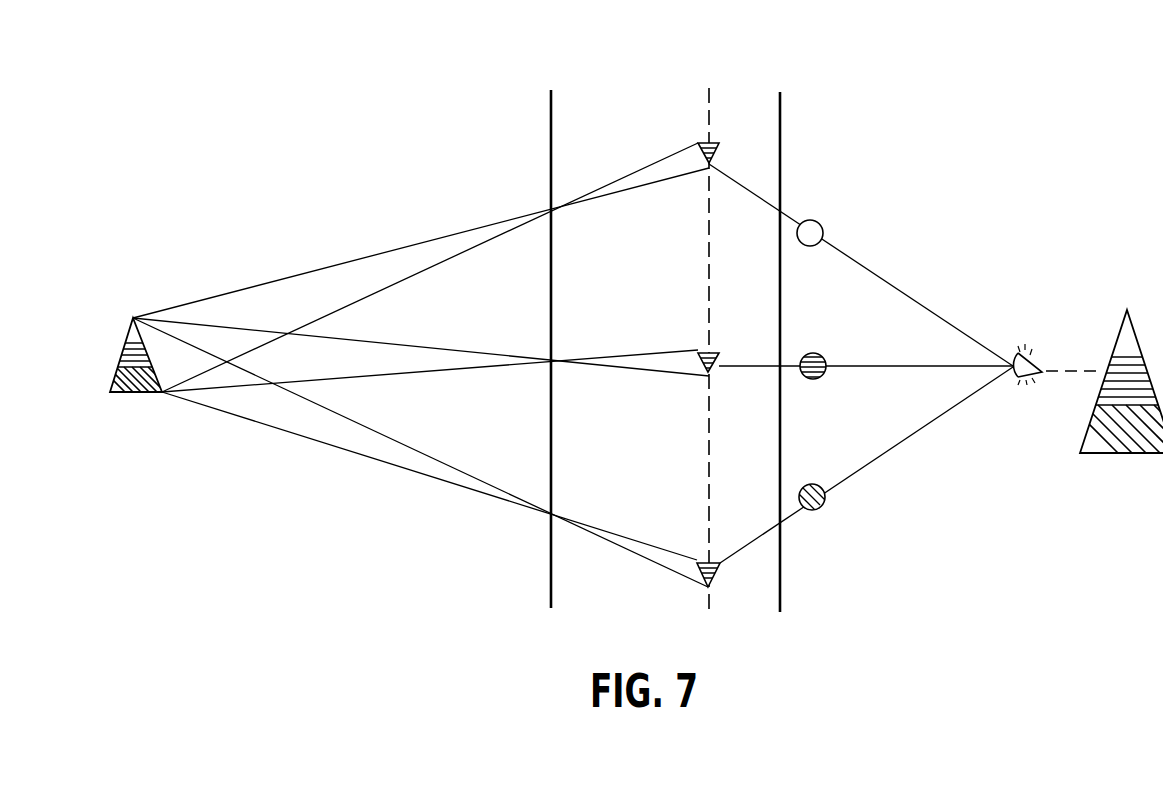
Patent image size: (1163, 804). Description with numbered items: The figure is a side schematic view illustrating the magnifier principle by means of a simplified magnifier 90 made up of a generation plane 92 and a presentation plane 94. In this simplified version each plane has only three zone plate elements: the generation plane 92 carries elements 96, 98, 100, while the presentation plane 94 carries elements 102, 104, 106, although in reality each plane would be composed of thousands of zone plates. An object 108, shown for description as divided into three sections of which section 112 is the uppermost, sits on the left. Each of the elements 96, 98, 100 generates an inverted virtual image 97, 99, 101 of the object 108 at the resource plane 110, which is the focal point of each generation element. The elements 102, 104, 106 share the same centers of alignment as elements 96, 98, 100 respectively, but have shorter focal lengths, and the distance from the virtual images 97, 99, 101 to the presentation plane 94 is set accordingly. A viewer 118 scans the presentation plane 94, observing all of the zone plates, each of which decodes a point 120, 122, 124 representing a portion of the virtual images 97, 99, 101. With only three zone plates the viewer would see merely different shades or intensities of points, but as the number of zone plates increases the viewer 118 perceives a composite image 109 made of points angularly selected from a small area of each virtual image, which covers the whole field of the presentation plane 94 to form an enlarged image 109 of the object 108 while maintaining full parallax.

The magnifier 90 is at (635, 80).
The generation plane 92 is at (549, 112).
The presentation plane 94 is at (781, 122).
The zone plate element of generation plane 96 is at (549, 210).
The inverted virtual image 97 is at (697, 145).
The zone plate element of generation plane 98 is at (549, 357).
The inverted virtual image 99 is at (700, 352).
The zone plate element of generation plane 100 is at (549, 508).
The inverted virtual image 101 is at (700, 562).
The zone plate element of presentation plane 102 is at (781, 207).
The zone plate element of presentation plane 104 is at (781, 350).
The zone plate element of presentation plane 106 is at (782, 522).
The object 108 is at (110, 335).
The composite image 109 is at (1113, 300).
The resource plane 110 is at (711, 115).
The section of object 112 is at (131, 335).
The viewer 118 is at (1030, 382).
The decoded point 120 is at (823, 226).
The decoded point 122 is at (826, 360).
The decoded point 124 is at (818, 484).